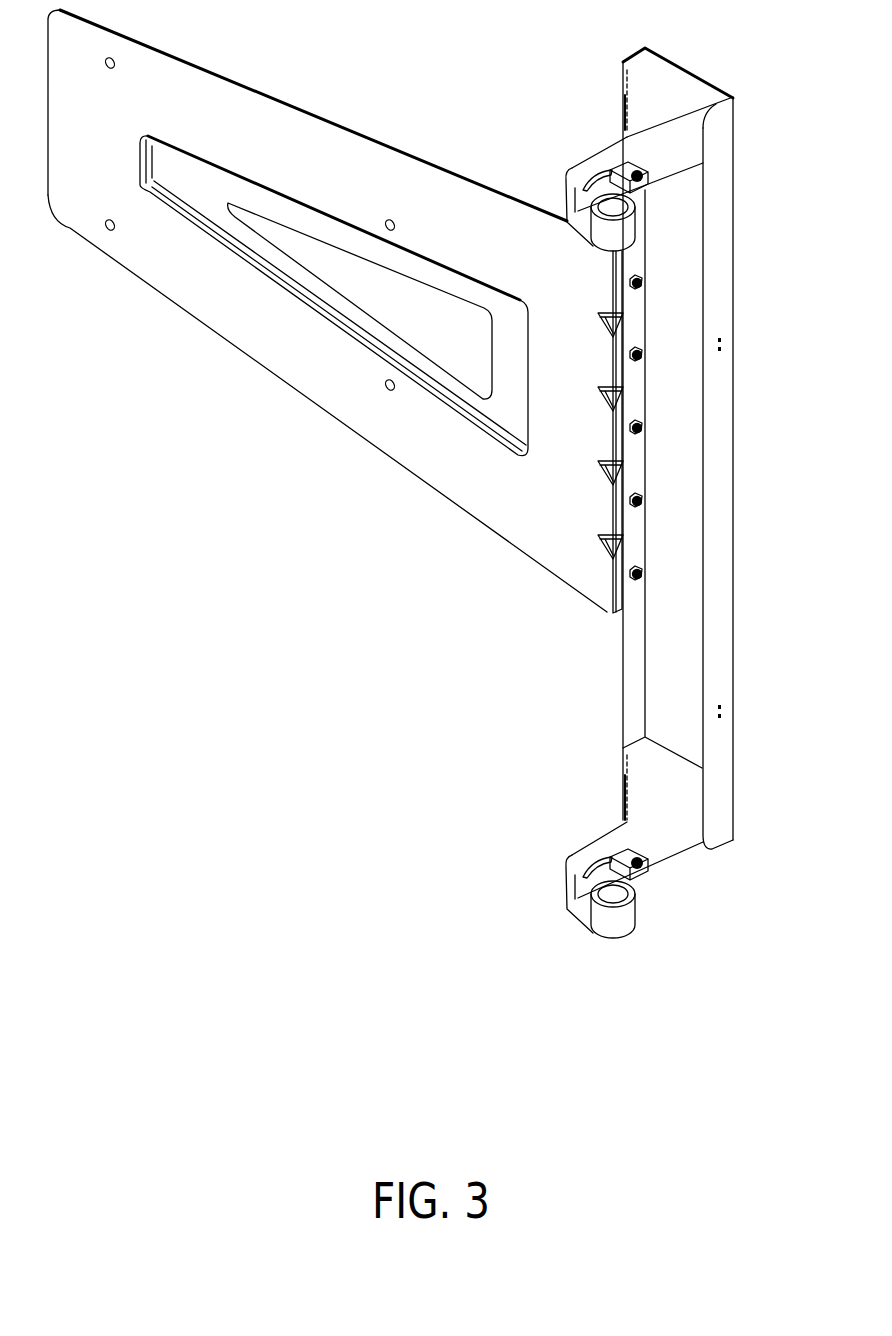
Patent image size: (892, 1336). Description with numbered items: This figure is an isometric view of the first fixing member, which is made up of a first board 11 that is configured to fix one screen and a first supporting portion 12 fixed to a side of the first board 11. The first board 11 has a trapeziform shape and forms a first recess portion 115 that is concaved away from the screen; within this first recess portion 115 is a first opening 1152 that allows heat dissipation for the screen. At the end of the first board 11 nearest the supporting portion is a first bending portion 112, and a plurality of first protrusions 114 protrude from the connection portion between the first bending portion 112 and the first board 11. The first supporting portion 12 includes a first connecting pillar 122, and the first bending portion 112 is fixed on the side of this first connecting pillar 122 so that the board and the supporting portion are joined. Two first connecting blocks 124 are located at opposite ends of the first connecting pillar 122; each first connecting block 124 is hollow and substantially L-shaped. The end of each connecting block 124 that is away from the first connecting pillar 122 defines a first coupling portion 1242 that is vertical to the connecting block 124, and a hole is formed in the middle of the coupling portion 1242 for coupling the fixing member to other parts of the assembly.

The first board 11 is at (232, 276).
The first bending portion 112 is at (617, 580).
The first protrusions 114 is at (610, 557).
The first recess portion 115 is at (500, 425).
The first opening 1152 is at (433, 340).
The first supporting portion 12 is at (777, 950).
The first connecting pillar 122 is at (692, 633).
The first connecting block 124 is at (658, 805).
The first coupling portion 1242 is at (588, 916).